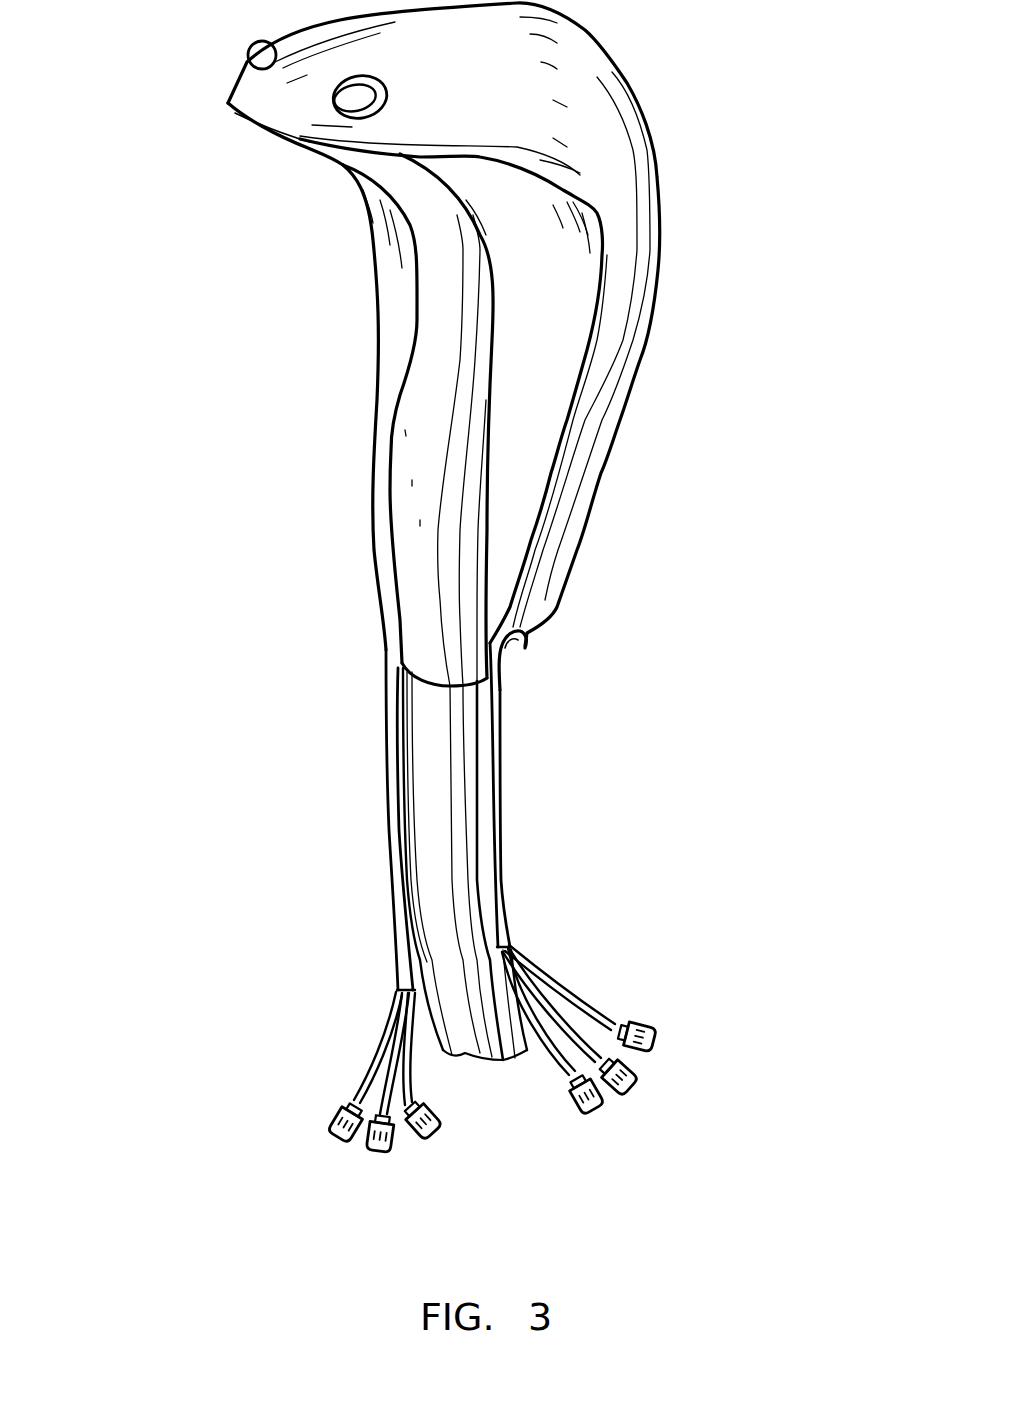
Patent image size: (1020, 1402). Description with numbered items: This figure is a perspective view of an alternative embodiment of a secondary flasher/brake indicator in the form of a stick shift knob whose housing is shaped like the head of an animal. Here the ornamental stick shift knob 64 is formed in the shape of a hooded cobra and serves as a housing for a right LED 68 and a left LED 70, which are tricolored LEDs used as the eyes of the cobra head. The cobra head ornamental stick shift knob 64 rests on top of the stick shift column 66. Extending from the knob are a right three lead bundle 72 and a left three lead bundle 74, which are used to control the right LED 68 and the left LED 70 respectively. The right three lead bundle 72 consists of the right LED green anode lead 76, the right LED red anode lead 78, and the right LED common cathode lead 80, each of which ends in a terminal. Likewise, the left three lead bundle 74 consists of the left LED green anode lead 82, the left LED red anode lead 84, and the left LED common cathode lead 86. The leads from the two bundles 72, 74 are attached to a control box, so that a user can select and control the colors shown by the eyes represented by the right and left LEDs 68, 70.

The ornamental stick shift knob 64 is at (633, 252).
The stick shift column 66 is at (428, 813).
The right LED 68 is at (357, 103).
The left LED 70 is at (260, 53).
The right three lead bundle 72 is at (483, 822).
The left three lead bundle 74 is at (403, 912).
The right LED green anode lead 76 is at (657, 1037).
The right LED red anode lead 78 is at (640, 1085).
The right LED common cathode lead 80 is at (598, 1110).
The left LED green anode lead 82 is at (337, 1142).
The left LED red anode lead 84 is at (377, 1155).
The left LED common cathode lead 86 is at (433, 1133).